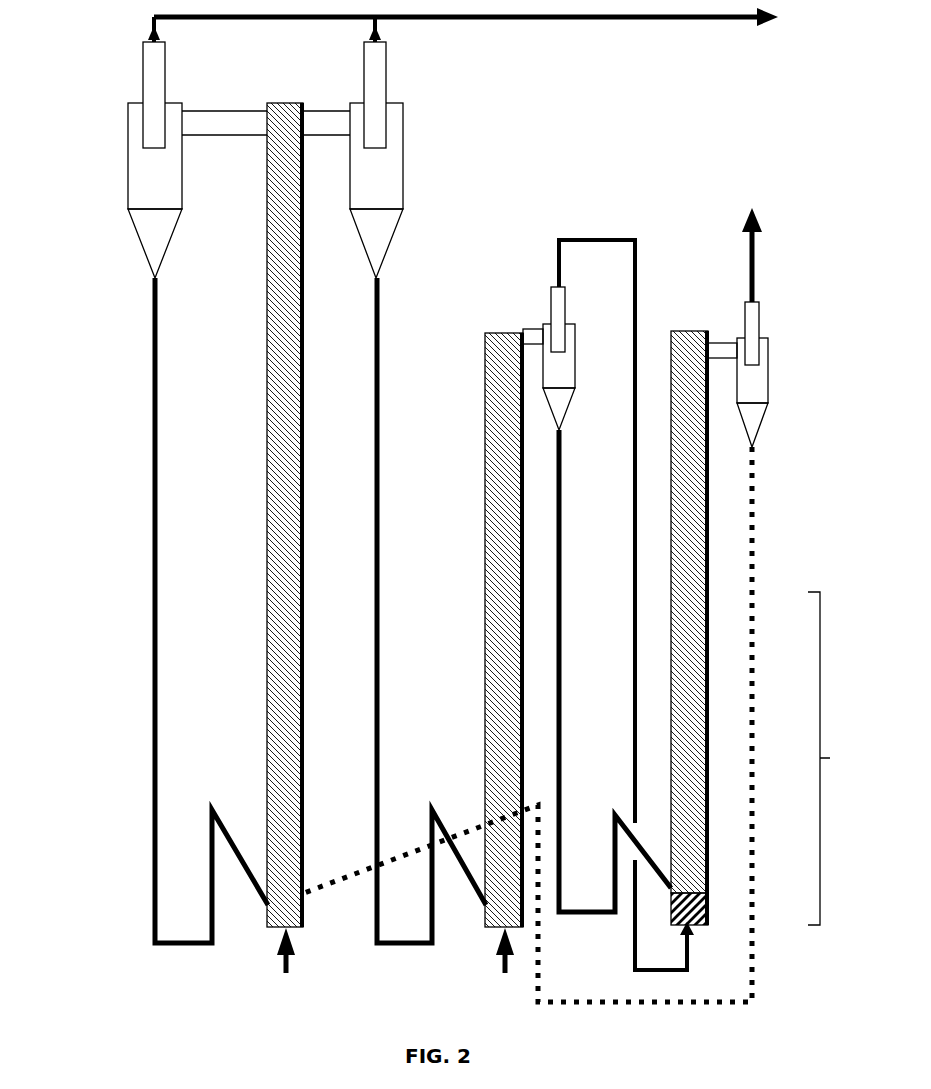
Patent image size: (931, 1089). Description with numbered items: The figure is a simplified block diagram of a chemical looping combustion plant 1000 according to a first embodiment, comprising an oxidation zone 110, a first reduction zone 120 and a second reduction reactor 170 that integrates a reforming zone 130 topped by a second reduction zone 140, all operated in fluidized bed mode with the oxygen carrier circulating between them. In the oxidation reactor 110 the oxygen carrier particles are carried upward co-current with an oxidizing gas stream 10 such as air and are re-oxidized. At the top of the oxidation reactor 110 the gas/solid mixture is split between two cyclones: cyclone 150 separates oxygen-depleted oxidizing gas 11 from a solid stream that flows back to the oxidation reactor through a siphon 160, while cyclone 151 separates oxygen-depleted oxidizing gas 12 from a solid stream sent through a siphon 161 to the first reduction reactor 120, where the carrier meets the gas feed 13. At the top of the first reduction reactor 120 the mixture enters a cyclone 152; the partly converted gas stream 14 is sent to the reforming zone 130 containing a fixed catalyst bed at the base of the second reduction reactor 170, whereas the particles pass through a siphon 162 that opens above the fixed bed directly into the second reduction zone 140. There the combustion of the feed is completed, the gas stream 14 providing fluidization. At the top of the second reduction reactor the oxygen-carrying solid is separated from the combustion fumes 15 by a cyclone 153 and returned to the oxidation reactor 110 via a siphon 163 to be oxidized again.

The chemical looping combustion plant 1000 is at (53, 83).
The oxidizing gas stream 10 is at (287, 967).
The oxygen-depleted oxidizing gas 11 is at (463, 29).
The oxygen-depleted oxidizing gas 12 is at (392, 33).
The gas feed 13 is at (509, 967).
The gas stream 14 is at (641, 607).
The combustion fumes 15 is at (749, 242).
The oxidation zone 110 is at (267, 485).
The first reduction zone 120 is at (485, 485).
The reforming zone 130 is at (710, 913).
The second reduction zone 140 is at (708, 615).
The gas/solid separation device 150 is at (128, 180).
The gas/solid separation device 151 is at (403, 170).
The gas/solid separation system 152 is at (548, 324).
The gas/solid separation device 153 is at (768, 353).
The siphon 160 is at (155, 600).
The siphon 161 is at (378, 598).
The siphon 162 is at (559, 588).
The siphon 163 is at (753, 500).
The second reduction reactor 170 is at (839, 758).